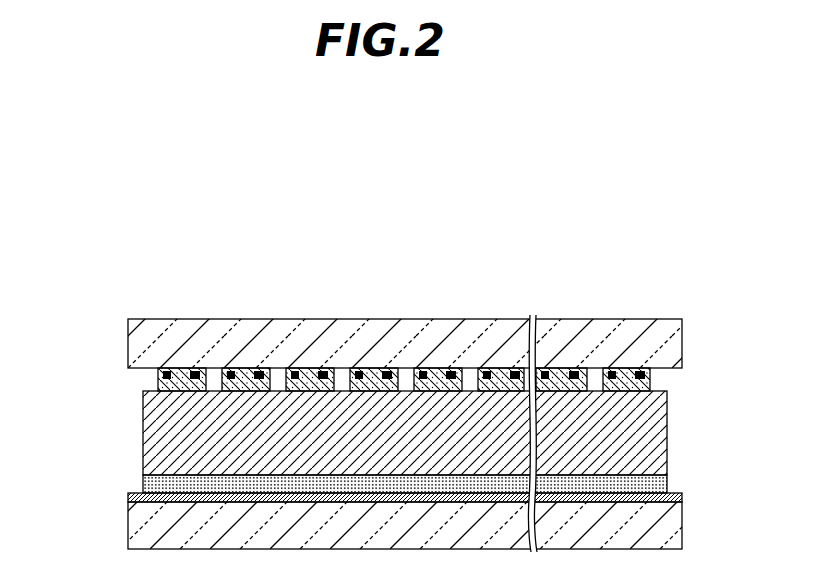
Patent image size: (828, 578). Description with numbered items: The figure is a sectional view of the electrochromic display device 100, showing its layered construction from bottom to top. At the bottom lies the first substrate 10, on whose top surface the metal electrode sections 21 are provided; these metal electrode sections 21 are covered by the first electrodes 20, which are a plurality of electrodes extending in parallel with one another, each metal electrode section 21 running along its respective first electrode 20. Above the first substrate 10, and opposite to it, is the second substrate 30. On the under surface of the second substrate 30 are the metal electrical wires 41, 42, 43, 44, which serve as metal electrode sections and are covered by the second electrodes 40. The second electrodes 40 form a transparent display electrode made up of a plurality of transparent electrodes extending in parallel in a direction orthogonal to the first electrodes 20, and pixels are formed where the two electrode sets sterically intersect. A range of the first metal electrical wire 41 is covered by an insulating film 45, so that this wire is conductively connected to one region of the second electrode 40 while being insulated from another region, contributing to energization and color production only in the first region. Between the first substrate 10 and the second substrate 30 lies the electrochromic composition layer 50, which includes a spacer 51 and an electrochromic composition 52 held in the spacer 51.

The electrochromic display device 100 is at (414, 252).
The first substrate 10 is at (678, 532).
The first electrodes 20 is at (667, 483).
The metal electrode sections 21 is at (682, 498).
The second substrate 30 is at (675, 347).
The second electrodes 40 is at (652, 381).
The first metal electrical wire 41 is at (167, 371).
The metal electrical wire 42 is at (200, 371).
The metal electrical wire 43 is at (389, 375).
The metal electrical wire 44 is at (417, 375).
The insulating film 45 is at (157, 386).
The electrochromic composition layer 50 is at (173, 431).
The spacer 51 is at (405, 433).
The electrochromic composition 52 is at (405, 433).